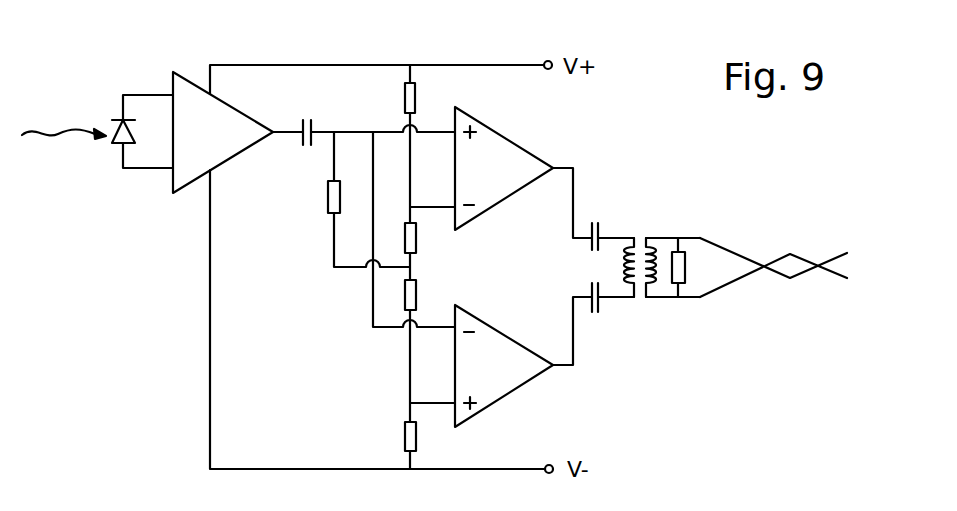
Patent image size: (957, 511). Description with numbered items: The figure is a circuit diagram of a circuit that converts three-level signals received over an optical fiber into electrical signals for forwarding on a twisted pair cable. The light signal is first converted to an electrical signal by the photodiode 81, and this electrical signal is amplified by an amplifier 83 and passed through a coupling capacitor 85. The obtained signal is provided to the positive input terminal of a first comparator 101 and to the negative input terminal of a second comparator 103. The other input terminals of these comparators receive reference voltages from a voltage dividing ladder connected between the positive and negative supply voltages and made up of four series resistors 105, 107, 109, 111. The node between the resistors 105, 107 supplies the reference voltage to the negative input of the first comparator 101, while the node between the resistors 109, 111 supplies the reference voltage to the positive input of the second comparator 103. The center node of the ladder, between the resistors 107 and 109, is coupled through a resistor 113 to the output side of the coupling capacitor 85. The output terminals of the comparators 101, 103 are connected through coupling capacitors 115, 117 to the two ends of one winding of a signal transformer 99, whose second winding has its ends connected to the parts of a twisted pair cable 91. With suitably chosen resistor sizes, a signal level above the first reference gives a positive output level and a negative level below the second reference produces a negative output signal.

The photodiode 81 is at (118, 147).
The amplifier 83 is at (187, 85).
The coupling capacitor 85 is at (298, 120).
The twisted pair cable 91 is at (785, 255).
The signal transformer 99 is at (642, 225).
The first comparator 101 is at (505, 141).
The second comparator 103 is at (505, 340).
The resistor 105 is at (404, 94).
The resistor 107 is at (417, 243).
The resistor 109 is at (417, 291).
The resistor 111 is at (404, 432).
The resistor 113 is at (327, 193).
The coupling capacitor 115 is at (598, 222).
The coupling capacitor 117 is at (598, 312).